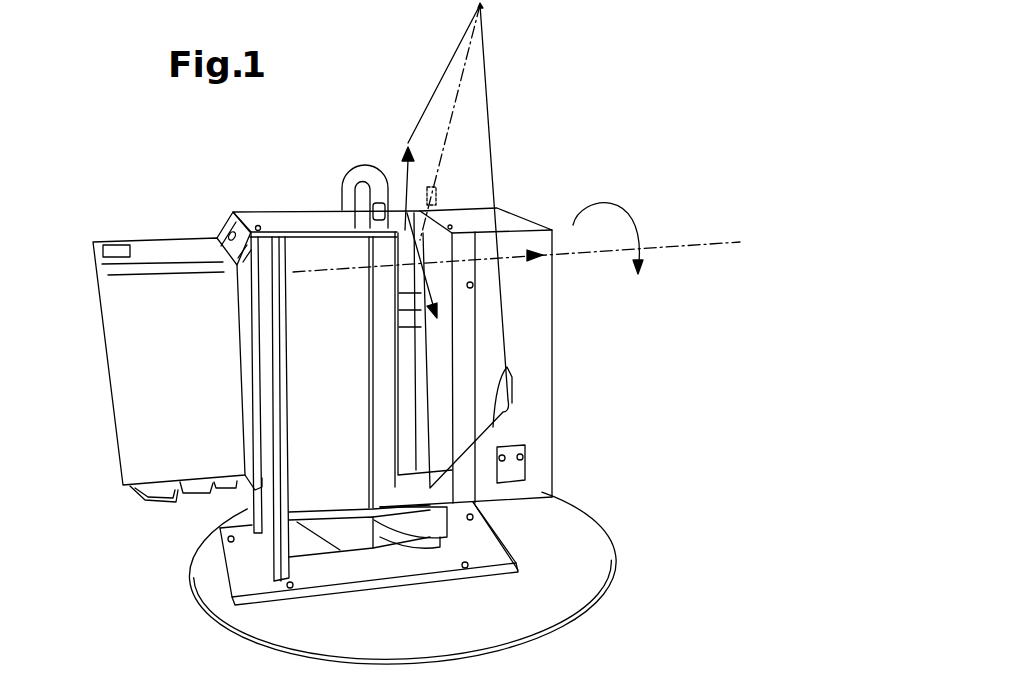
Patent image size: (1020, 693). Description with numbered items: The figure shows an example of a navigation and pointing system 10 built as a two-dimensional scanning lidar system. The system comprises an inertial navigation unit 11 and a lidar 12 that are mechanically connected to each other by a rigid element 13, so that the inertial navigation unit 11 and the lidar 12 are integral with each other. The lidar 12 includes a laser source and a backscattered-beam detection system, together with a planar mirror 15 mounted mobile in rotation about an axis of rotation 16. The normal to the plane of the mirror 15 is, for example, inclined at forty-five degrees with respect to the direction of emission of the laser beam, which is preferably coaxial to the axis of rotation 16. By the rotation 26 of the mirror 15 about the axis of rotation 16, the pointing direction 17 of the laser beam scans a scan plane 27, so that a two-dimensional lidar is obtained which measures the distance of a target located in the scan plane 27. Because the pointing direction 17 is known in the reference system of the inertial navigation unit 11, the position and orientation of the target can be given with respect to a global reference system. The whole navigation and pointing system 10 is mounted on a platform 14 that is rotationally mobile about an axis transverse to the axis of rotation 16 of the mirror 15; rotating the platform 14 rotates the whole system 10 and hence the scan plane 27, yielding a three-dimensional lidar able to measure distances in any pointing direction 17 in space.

The navigation and pointing system 10 is at (152, 530).
The inertial navigation unit 11 is at (177, 300).
The lidar 12 is at (542, 350).
The rigid element 13 is at (277, 552).
The platform 14 is at (587, 553).
The planar mirror 15 is at (400, 212).
The axis of rotation 16 is at (700, 243).
The pointing direction 17 is at (463, 75).
The rotation 26 is at (612, 200).
The scan plane 27 is at (477, 130).